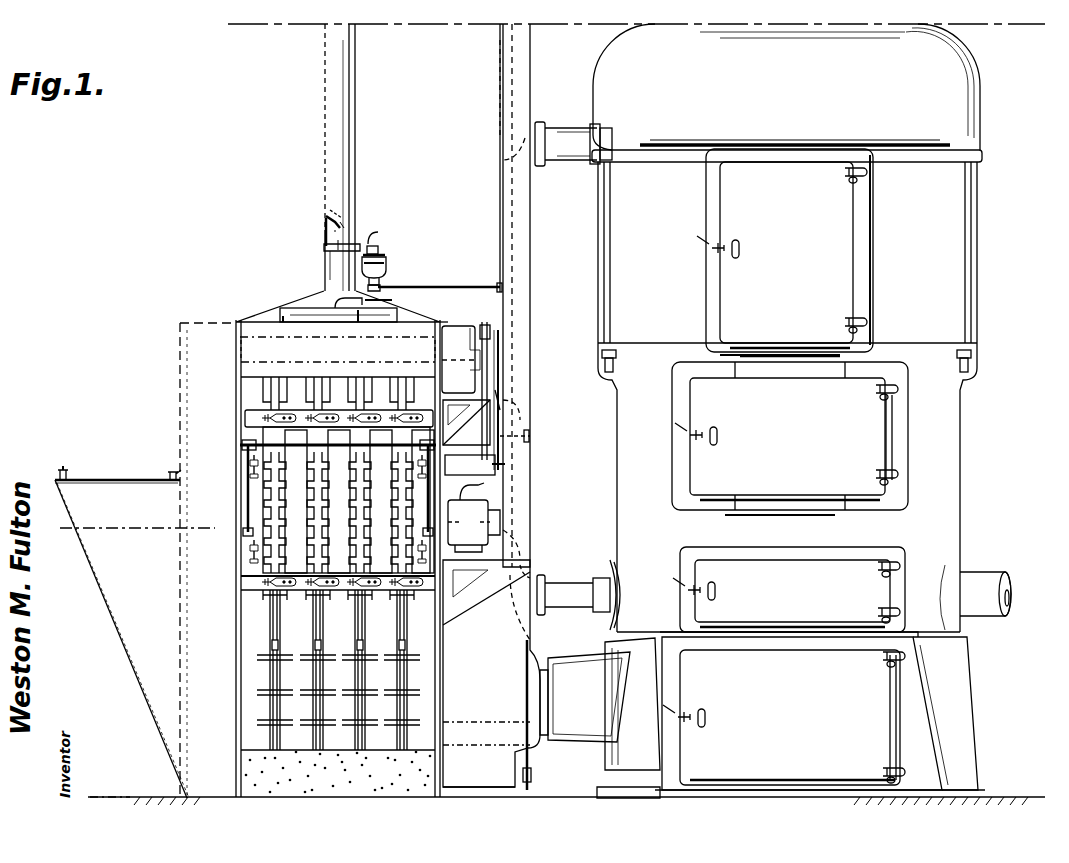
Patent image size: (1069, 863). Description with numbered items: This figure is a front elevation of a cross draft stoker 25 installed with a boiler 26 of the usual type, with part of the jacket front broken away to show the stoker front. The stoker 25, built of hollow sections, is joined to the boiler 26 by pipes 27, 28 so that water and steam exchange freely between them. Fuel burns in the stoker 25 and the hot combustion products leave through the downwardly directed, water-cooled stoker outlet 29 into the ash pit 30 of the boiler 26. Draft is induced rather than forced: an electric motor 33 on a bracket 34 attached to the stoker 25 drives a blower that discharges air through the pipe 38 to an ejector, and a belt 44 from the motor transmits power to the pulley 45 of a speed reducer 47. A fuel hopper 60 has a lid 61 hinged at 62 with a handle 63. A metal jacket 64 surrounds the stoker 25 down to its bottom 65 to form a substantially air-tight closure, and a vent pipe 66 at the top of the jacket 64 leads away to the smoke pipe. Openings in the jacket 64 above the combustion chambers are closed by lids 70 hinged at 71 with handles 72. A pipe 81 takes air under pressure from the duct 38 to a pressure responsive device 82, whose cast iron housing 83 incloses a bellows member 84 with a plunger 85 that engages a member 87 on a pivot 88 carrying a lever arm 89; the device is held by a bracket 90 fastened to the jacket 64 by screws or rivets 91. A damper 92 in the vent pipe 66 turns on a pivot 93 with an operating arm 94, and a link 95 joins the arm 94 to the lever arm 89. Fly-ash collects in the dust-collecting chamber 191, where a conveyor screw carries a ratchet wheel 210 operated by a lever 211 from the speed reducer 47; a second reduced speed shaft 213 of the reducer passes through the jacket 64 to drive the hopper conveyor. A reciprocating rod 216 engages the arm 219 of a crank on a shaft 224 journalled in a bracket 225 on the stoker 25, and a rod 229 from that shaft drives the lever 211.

The stoker 25 is at (265, 324).
The boiler 26 is at (963, 497).
The pipe 27 is at (573, 598).
The pipe 28 is at (568, 148).
The stoker outlet 29 is at (548, 712).
The ash pit 30 is at (780, 757).
The electric motor 33 is at (474, 517).
The bracket 34 is at (465, 420).
The pipe 38 is at (530, 491).
The belt 44 is at (492, 314).
The pulley 45 is at (498, 375).
The speed reducer 47 is at (456, 350).
The fuel hopper 60 is at (127, 655).
The lid 61 is at (120, 480).
The hinge 62 is at (182, 480).
The handle 63 is at (65, 470).
The metal jacket 64 is at (180, 368).
The bottom 65 is at (420, 797).
The vent pipe 66 is at (355, 128).
The lid 70 is at (316, 322).
The hinge 71 is at (283, 322).
The handle 72 is at (358, 322).
The pipe 81 is at (470, 287).
The pressure responsive device 82 is at (386, 264).
The housing 83 is at (386, 276).
The bellows member 84 is at (385, 255).
The plunger 85 is at (378, 248).
The member 87 is at (378, 232).
The pivot 88 is at (324, 247).
The lever arm 89 is at (335, 252).
The bracket 90 is at (392, 300).
The screws or rivets 91 is at (362, 300).
The damper 92 is at (325, 208).
The pivot 93 is at (340, 220).
The operating arm 94 is at (326, 214).
The link 95 is at (326, 228).
The dust-collecting chamber 191 is at (482, 770).
The ratchet wheel 210 is at (530, 787).
The lever 211 is at (531, 772).
The second reduced speed shaft 213 is at (446, 325).
The rod 216 is at (497, 400).
The arm 219 is at (530, 436).
The shaft 224 is at (470, 465).
The bracket 225 is at (505, 464).
The rod 229 is at (522, 514).